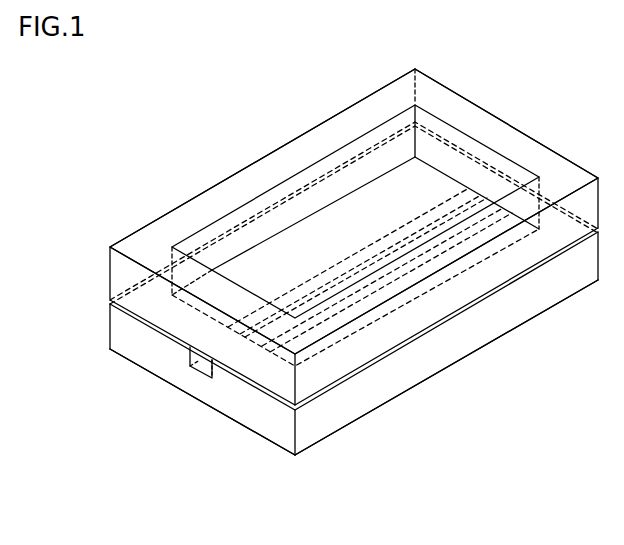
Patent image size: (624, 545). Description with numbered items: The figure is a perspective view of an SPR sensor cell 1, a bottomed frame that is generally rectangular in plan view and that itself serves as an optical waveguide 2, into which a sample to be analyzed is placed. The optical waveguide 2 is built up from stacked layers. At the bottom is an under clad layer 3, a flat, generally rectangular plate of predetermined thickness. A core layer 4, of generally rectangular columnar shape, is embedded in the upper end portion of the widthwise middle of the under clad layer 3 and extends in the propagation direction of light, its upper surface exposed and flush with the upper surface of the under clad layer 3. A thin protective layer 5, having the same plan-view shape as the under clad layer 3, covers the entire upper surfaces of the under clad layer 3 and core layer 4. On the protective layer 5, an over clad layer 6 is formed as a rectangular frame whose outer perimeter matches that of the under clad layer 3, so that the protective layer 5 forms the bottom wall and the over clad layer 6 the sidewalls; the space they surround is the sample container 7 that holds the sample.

The SPR sensor cell 1 is at (296, 531).
The optical waveguide 2 is at (220, 398).
The under clad layer 3 is at (256, 420).
The core layer 4 is at (197, 367).
The protective layer 5 is at (107, 298).
The over clad layer 6 is at (108, 247).
The sample container 7 is at (430, 181).